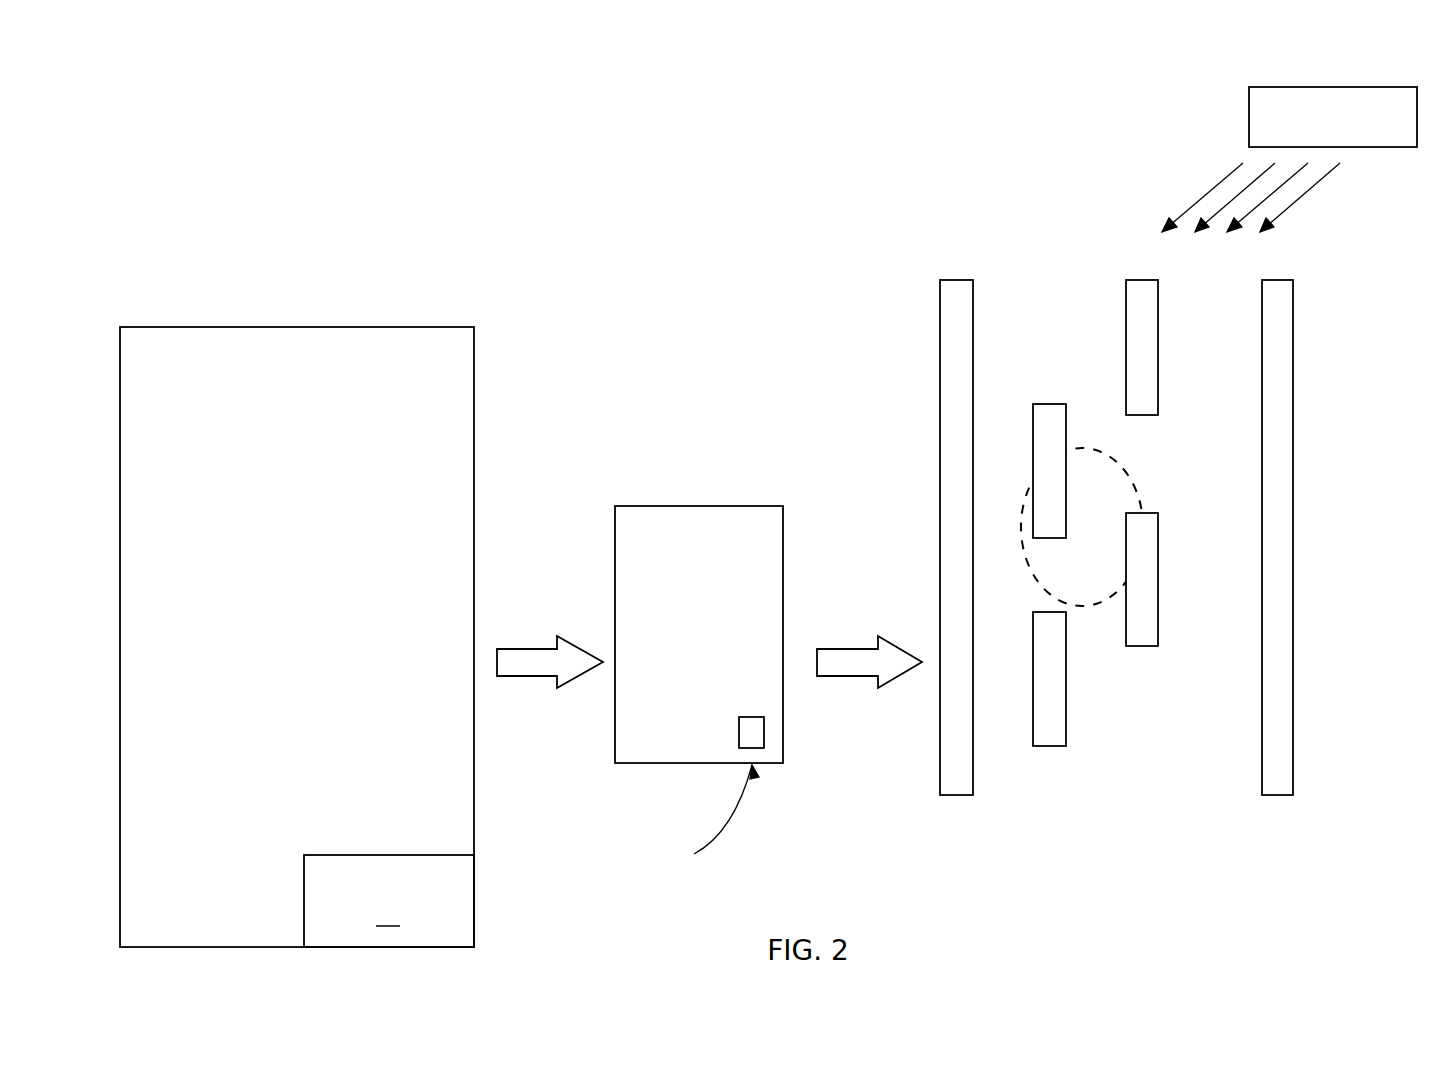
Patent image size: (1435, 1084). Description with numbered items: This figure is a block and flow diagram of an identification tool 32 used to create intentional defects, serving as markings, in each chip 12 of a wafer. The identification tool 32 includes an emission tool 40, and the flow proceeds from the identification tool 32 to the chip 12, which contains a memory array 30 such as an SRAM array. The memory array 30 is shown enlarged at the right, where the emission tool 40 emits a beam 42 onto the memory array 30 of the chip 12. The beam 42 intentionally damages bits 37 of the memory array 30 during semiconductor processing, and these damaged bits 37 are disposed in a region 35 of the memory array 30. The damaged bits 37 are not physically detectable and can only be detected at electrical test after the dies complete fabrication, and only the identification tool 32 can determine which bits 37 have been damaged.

The chip 12 is at (708, 506).
The memory array 30 is at (752, 735).
The identification tool 32 is at (333, 327).
The region 35 is at (1120, 472).
The bits 37 is at (1050, 418).
The emission tool 40 is at (1276, 87).
The beam 42 is at (1195, 195).